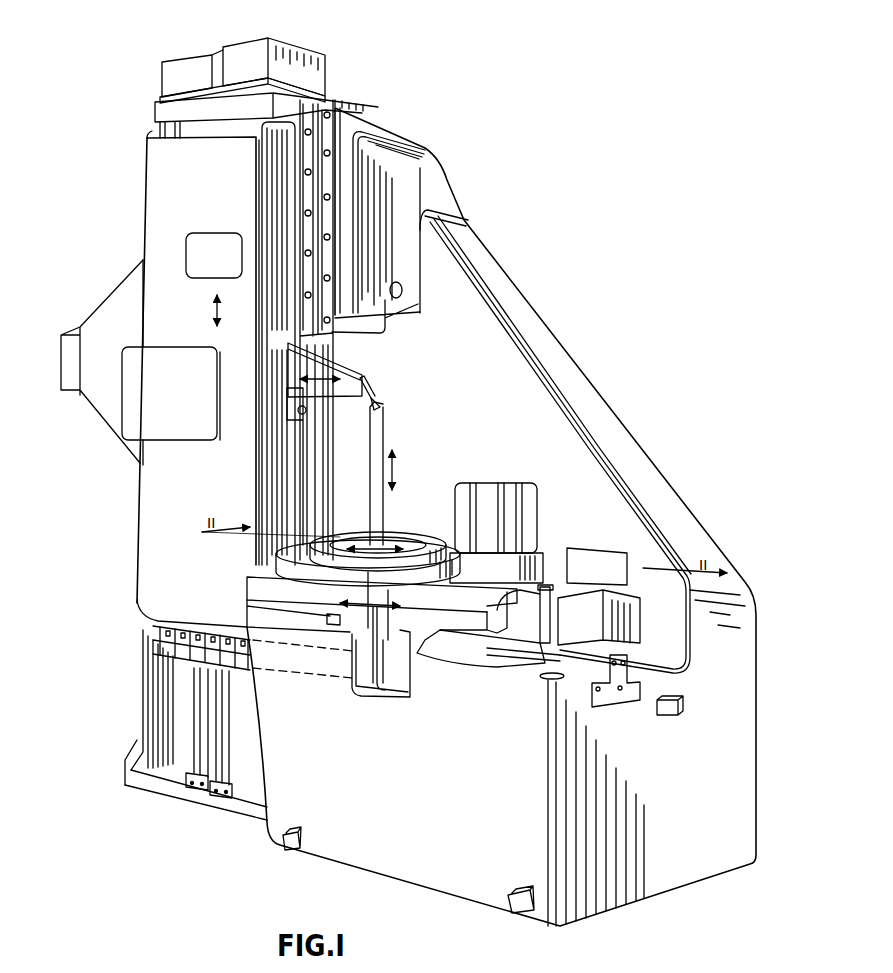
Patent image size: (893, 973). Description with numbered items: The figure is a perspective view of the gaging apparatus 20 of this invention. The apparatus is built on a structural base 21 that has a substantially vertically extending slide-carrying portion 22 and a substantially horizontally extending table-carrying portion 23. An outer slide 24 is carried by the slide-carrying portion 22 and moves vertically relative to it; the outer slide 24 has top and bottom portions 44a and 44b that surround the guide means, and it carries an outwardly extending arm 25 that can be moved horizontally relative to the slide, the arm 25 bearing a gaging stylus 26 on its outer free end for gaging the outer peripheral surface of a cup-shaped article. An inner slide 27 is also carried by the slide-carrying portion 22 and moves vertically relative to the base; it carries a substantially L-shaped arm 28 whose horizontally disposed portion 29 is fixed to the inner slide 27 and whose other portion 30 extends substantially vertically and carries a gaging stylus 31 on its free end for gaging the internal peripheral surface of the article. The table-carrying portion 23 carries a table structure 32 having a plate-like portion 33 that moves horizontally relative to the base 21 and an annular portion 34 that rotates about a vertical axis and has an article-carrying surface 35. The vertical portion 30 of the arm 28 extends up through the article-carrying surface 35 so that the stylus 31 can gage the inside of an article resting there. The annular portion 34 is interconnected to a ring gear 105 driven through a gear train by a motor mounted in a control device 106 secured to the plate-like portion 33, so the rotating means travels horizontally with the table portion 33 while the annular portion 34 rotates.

The gaging apparatus 20 is at (567, 162).
The structural base 21 is at (596, 390).
The slide-carrying portion 22 is at (205, 107).
The table-carrying portion 23 is at (445, 880).
The outer slide 24 is at (160, 526).
The arm 25 is at (340, 358).
The gaging stylus 26 is at (372, 390).
The inner slide 27 is at (158, 643).
The L-shaped arm 28 is at (386, 630).
The horizontally disposed portion 29 is at (297, 667).
The vertically extending portion 30 is at (383, 503).
The gaging stylus 31 is at (382, 404).
The table structure 32 is at (438, 502).
The plate-like portion 33 is at (450, 607).
The annular portion 34 is at (441, 548).
The article-carrying surface 35 is at (325, 535).
The top portion 44a is at (182, 143).
The bottom portion 44b is at (158, 608).
The ring gear 105 is at (295, 555).
The control device 106 is at (537, 512).